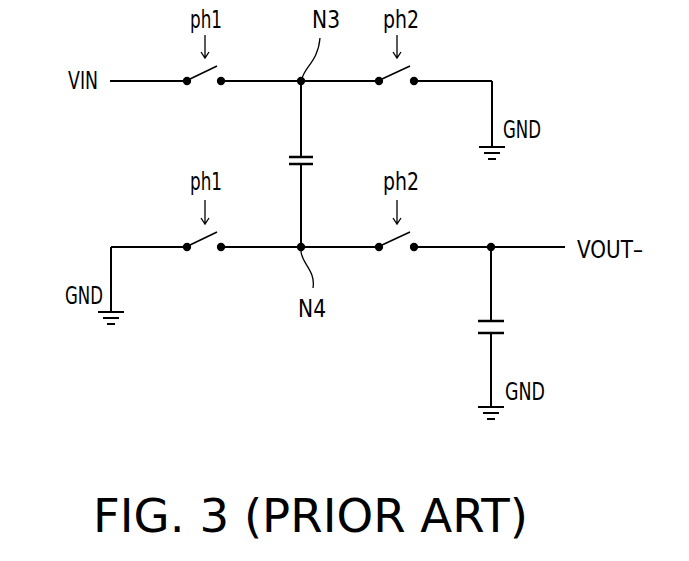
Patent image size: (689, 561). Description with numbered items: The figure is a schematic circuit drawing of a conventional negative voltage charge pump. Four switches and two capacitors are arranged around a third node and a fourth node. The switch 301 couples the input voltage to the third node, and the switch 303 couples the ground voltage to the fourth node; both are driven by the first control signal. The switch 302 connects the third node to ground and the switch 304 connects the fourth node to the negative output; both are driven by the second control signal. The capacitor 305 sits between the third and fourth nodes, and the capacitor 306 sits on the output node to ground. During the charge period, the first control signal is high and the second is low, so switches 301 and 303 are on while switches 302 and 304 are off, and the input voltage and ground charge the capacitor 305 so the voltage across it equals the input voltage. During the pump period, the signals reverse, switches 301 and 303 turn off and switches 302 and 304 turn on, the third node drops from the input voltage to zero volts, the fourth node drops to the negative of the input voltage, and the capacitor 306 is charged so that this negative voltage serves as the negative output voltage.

The switch 301 is at (205, 84).
The switch 302 is at (397, 84).
The switch 303 is at (205, 250).
The switch 304 is at (397, 250).
The capacitor 305 is at (317, 161).
The capacitor 306 is at (515, 327).